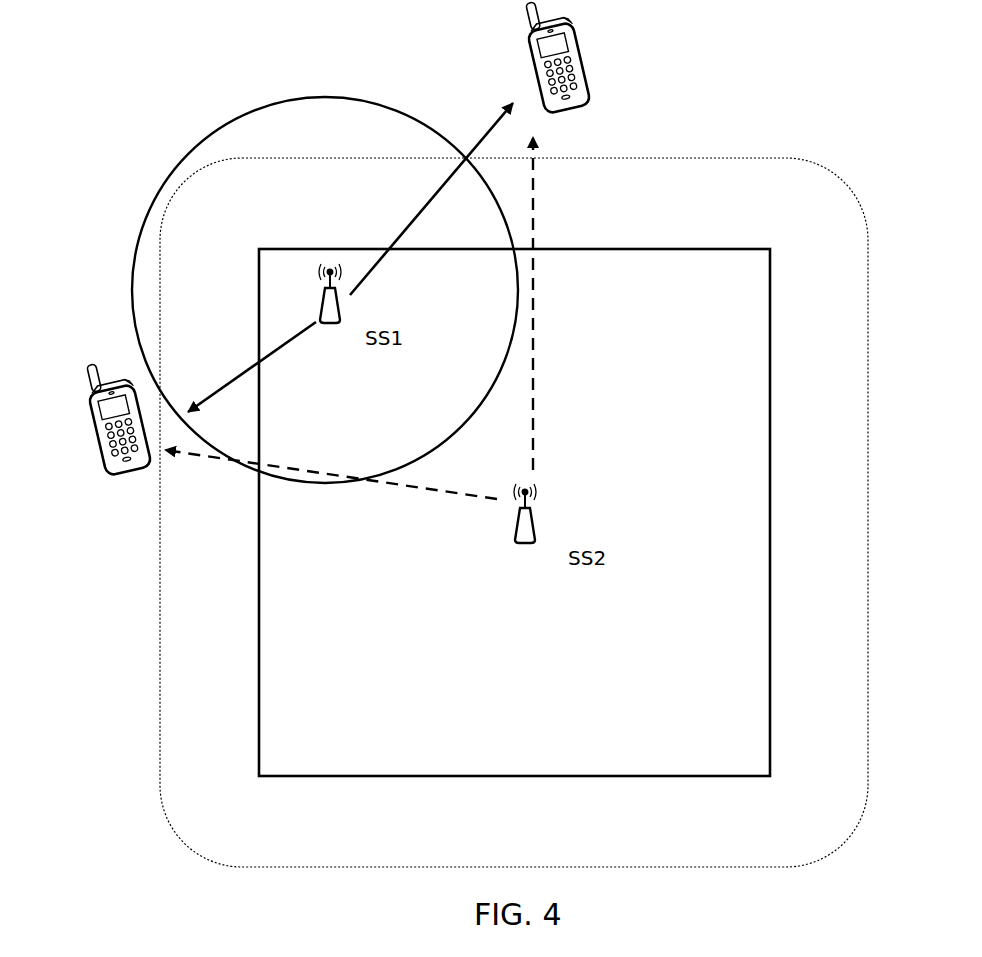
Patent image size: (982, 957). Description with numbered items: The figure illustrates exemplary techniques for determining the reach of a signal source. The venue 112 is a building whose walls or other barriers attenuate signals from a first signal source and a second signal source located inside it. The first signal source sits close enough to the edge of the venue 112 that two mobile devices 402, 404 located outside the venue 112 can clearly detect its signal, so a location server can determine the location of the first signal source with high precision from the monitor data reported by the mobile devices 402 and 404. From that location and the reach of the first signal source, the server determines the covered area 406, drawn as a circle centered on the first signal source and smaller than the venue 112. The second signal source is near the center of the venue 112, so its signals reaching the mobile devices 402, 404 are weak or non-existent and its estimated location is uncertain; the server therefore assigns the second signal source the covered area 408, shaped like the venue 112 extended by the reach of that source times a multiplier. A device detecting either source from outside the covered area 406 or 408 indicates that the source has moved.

The mobile device 402 is at (122, 474).
The mobile device 404 is at (588, 81).
The covered area 406 is at (205, 143).
The covered area 408 is at (806, 159).
The venue 112 is at (660, 777).